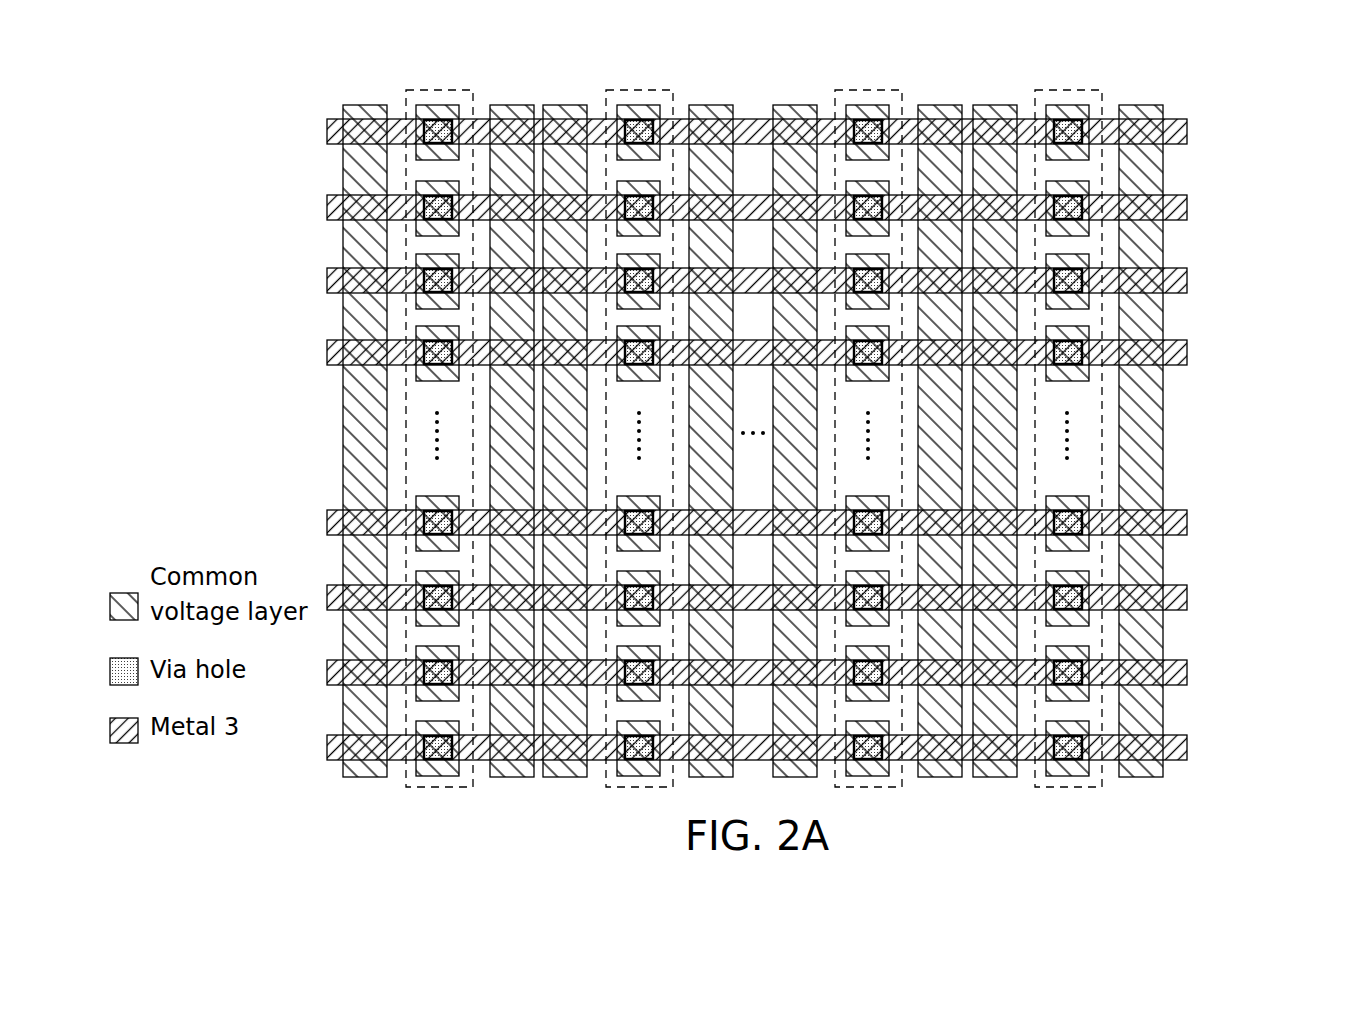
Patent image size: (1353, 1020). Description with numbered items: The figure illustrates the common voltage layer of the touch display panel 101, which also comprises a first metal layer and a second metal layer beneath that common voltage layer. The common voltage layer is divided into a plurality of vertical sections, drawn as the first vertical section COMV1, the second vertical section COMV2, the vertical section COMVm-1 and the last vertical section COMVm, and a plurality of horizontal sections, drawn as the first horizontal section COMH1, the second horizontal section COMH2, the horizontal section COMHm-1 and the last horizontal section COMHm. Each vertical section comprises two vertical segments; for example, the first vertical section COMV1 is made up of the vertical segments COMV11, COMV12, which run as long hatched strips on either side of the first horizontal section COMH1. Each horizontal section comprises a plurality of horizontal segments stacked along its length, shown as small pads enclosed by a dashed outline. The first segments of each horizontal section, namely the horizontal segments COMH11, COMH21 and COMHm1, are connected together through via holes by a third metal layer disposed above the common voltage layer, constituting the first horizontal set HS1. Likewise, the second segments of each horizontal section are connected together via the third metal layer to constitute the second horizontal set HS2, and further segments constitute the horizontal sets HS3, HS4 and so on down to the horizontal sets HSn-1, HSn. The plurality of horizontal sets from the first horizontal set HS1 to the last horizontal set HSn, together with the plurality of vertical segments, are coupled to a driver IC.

The touch display panel 101 is at (236, 104).
The vertical segment COMV11 is at (365, 105).
The vertical segment COMV12 is at (510, 105).
The vertical section COMV1 is at (441, 437).
The vertical section COMV2 is at (711, 777).
The vertical section COMVm-1 is at (940, 777).
The vertical section COMVm is at (1141, 777).
The horizontal section COMH1 is at (355, 405).
The horizontal section COMH2 is at (671, 405).
The horizontal section COMHm-1 is at (870, 90).
The horizontal section COMHm is at (1088, 405).
The horizontal segment COMH11 is at (427, 160).
The horizontal segment COMH21 is at (690, 78).
The horizontal segment COMHm1 is at (1127, 80).
The horizontal set HS1 is at (1187, 131).
The horizontal set HS2 is at (1187, 207).
The horizontal set HS3 is at (1187, 280).
The horizontal set HS4 is at (1187, 352).
The horizontal set HSn-1 is at (1187, 672).
The horizontal set HSn is at (1187, 747).